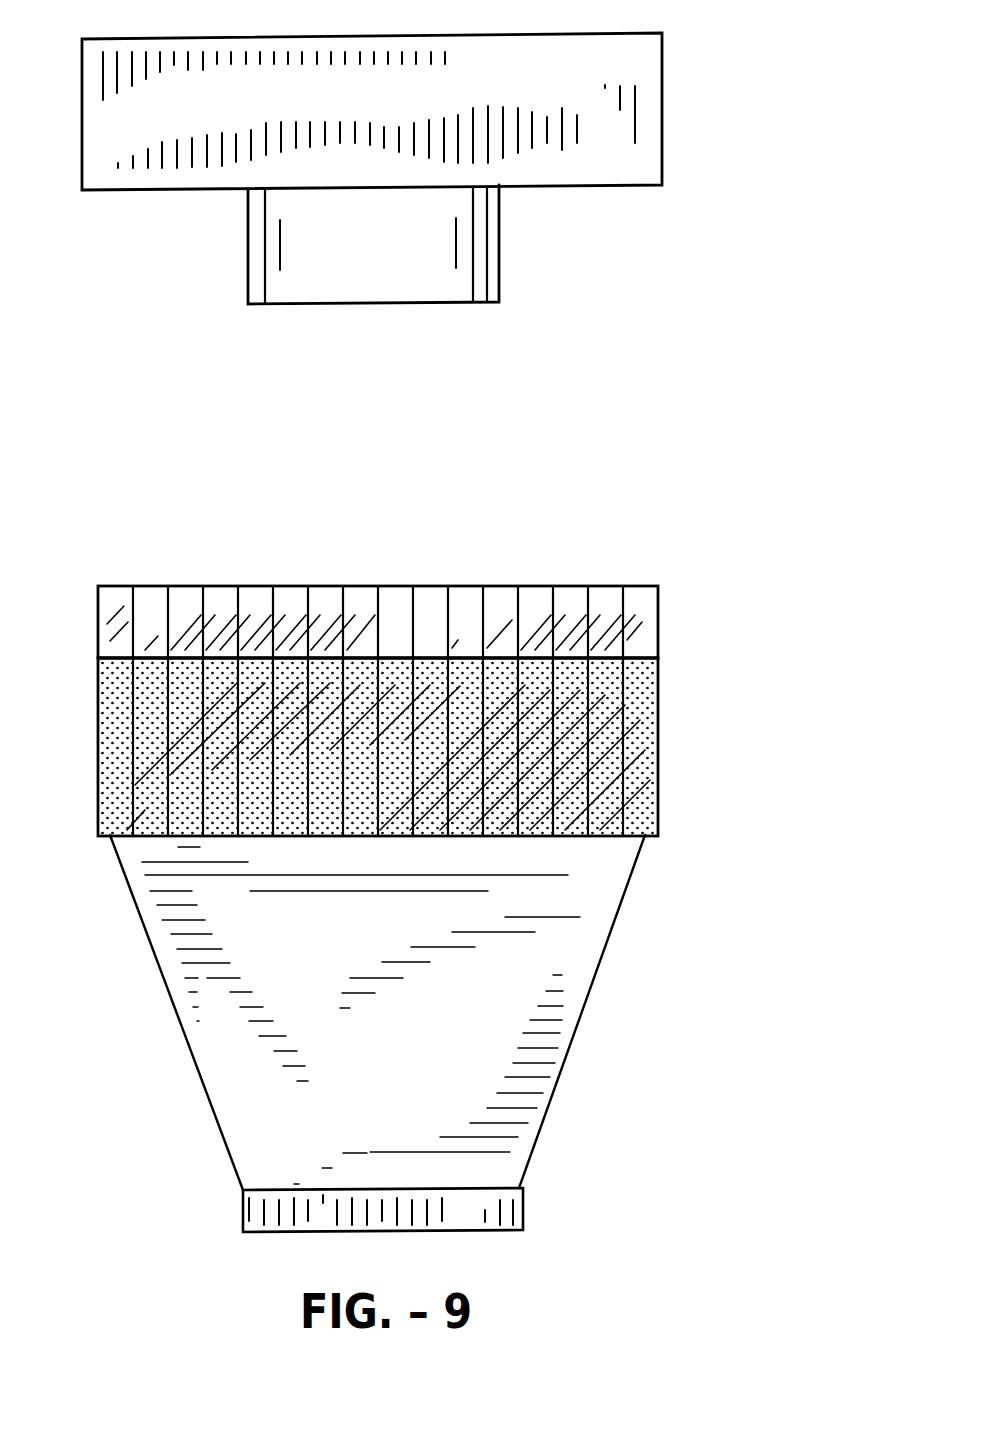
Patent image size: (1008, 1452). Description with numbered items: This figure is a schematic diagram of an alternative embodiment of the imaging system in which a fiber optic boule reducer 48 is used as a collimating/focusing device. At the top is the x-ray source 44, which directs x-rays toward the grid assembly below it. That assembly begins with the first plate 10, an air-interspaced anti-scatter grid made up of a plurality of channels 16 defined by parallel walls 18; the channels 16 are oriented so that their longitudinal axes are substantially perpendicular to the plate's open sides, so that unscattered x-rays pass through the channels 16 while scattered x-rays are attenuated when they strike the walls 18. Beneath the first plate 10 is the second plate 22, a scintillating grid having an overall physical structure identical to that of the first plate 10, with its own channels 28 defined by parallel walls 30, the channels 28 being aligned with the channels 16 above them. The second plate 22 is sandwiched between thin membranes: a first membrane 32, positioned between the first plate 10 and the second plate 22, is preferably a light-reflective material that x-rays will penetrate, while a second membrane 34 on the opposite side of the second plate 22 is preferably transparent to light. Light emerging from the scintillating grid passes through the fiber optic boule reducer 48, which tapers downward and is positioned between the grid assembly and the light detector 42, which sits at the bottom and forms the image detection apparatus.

The x-ray source 44 is at (663, 122).
The first plate 10 is at (408, 601).
The channels 16 is at (107, 610).
The parallel walls 18 is at (625, 600).
The second plate 22 is at (410, 774).
The parallel walls 30 is at (132, 707).
The first membrane 32 is at (640, 655).
The second membrane 34 is at (664, 805).
The channels 28 is at (148, 815).
The fiber optic boule reducer 48 is at (583, 1002).
The light detector 42 is at (512, 1216).